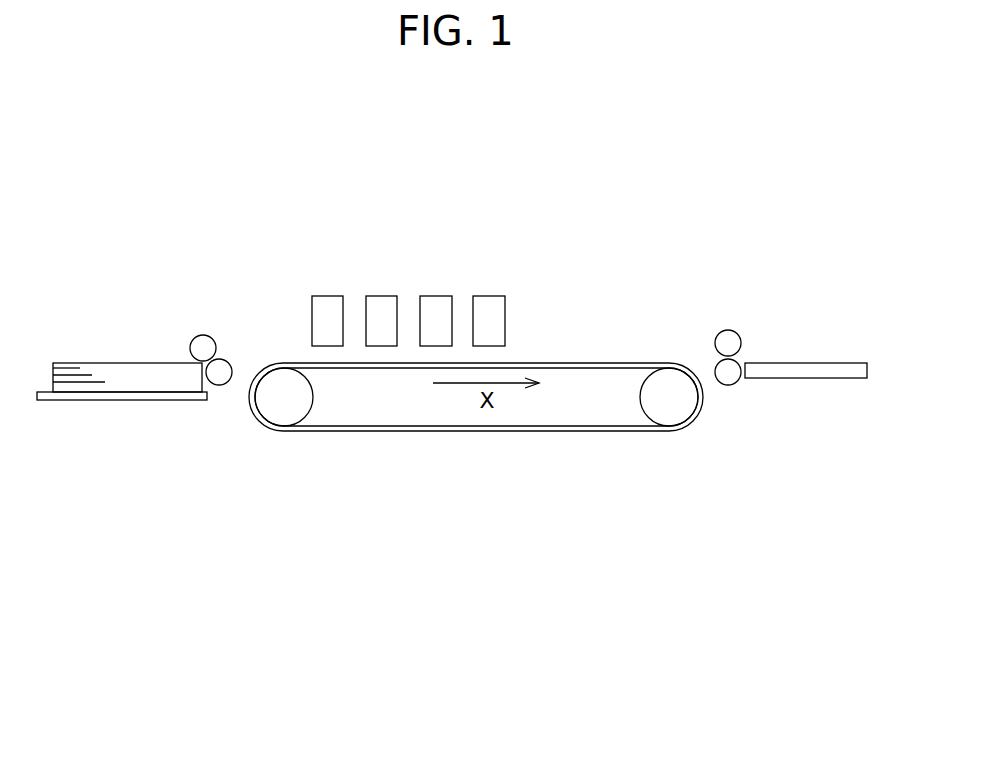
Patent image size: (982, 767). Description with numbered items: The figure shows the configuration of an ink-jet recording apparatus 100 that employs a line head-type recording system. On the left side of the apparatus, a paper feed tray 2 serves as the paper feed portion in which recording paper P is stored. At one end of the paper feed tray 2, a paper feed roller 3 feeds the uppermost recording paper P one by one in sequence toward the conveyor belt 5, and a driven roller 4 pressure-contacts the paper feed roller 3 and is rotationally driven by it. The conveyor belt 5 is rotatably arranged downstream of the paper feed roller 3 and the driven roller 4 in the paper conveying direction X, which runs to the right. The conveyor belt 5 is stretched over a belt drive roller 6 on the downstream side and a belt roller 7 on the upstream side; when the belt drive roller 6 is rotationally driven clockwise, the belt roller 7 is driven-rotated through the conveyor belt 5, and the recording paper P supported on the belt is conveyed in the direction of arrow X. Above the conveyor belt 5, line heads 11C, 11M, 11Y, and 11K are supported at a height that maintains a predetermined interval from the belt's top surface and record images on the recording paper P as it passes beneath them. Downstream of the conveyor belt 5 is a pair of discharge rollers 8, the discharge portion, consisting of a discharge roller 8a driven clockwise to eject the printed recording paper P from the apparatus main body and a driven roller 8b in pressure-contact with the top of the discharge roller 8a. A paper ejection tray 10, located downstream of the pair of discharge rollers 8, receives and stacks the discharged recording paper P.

The ink-jet recording apparatus 100 is at (248, 290).
The paper feed tray 2 is at (107, 400).
The recording paper P is at (124, 372).
The paper feed roller 3 is at (204, 346).
The driven roller 4 is at (219, 380).
The conveyor belt 5 is at (462, 432).
The belt drive roller 6 is at (669, 412).
The belt roller 7 is at (287, 410).
The line head 11C is at (330, 303).
The line head 11M is at (383, 303).
The line head 11Y is at (437, 303).
The line head 11K is at (491, 303).
The pair of discharge rollers 8 is at (696, 343).
The discharge roller 8a is at (728, 378).
The driven roller 8b is at (728, 342).
The paper ejection tray 10 is at (815, 372).